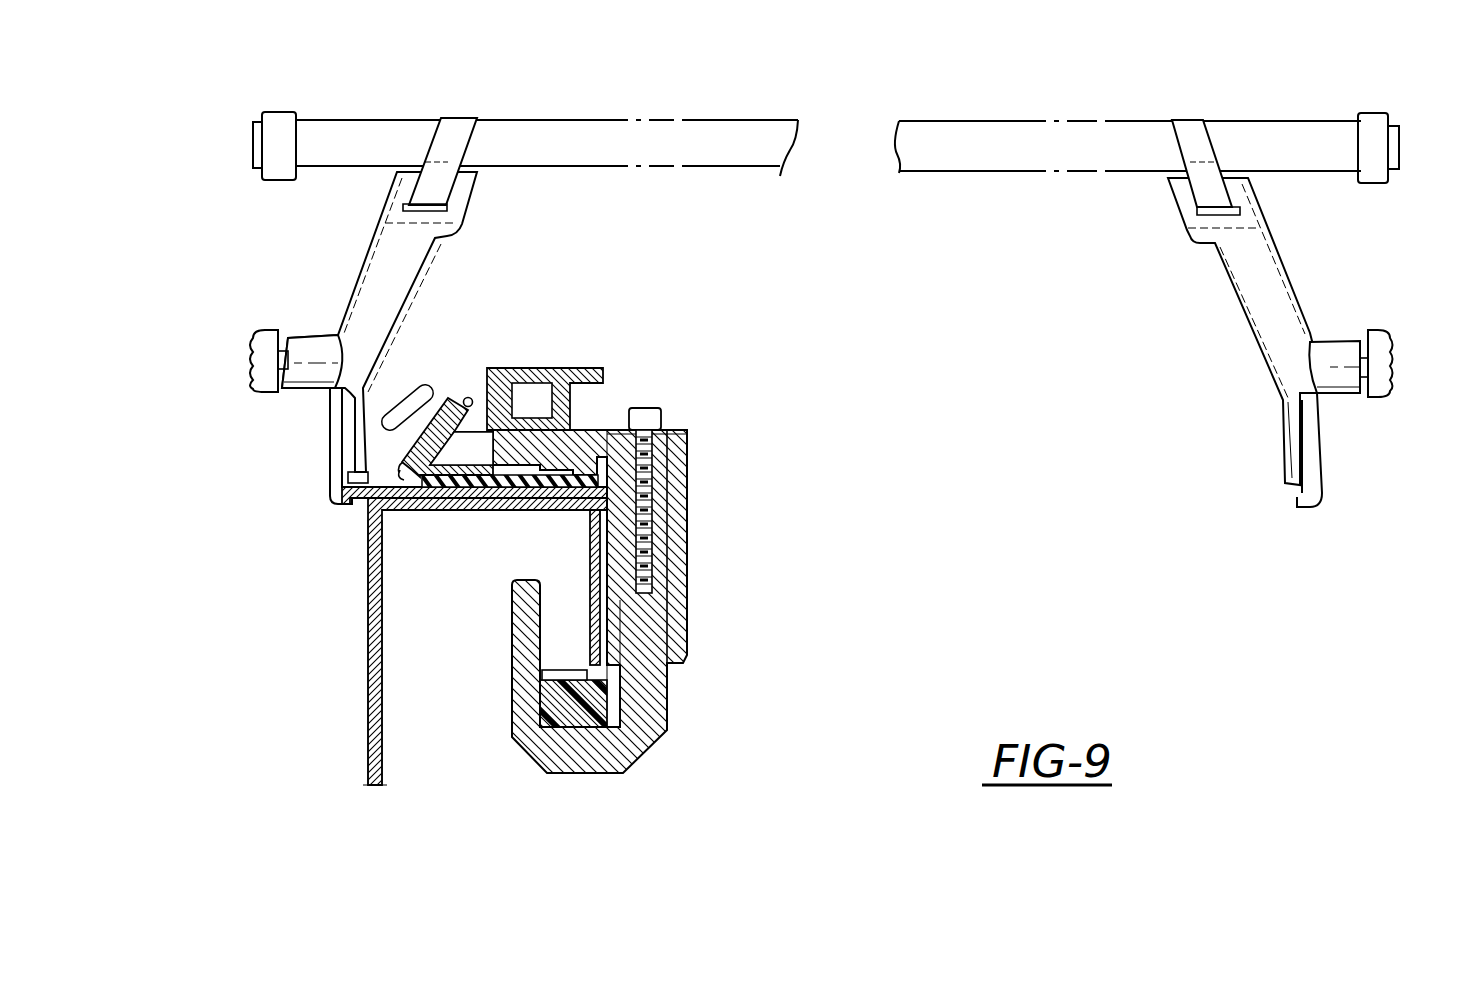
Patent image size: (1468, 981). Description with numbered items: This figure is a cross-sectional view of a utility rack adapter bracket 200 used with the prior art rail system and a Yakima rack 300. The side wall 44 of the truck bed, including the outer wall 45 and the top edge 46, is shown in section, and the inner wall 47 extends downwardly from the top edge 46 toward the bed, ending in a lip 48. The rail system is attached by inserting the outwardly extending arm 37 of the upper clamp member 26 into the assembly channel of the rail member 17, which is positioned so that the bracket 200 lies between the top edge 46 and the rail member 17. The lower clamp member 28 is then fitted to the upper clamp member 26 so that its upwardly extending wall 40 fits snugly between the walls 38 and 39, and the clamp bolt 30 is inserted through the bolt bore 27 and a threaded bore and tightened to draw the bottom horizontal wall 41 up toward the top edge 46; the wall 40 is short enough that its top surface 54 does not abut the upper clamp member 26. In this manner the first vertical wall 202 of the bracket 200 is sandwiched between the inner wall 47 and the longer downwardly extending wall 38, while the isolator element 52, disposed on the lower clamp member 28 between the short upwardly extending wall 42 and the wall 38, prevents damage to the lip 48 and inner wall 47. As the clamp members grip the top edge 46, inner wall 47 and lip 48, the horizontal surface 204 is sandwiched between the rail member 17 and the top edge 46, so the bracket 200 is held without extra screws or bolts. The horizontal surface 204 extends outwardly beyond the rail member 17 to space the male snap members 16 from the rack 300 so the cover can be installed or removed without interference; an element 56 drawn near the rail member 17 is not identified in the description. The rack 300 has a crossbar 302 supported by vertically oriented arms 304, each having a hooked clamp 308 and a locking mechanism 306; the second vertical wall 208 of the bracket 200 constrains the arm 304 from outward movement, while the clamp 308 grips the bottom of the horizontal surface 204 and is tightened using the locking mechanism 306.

The crossbar 302 is at (583, 130).
The utility rack 300 is at (297, 279).
The arms 304 is at (408, 268).
The locking mechanism 306 is at (253, 362).
The clamp 308 is at (330, 470).
The male snap members 16 is at (447, 379).
The support member 56 is at (503, 365).
The rail member 17 is at (579, 351).
The outwardly extending arm 37 is at (598, 437).
The clamp bolt 30 is at (660, 418).
The bolt bore 27 is at (658, 437).
The top surface 54 is at (650, 468).
The upper clamp member 26 is at (690, 522).
The first vertical wall 202 is at (600, 603).
The wall 39 is at (680, 642).
The longer downwardly extending wall 38 is at (650, 667).
The upwardly extending wall 40 is at (618, 703).
The lower clamp member 28 is at (638, 779).
The bottom horizontal wall 41 is at (580, 775).
The isolator element 52 is at (550, 735).
The short upwardly extending wall 42 is at (510, 660).
The side wall 44 is at (347, 706).
The outer wall 45 is at (368, 650).
The lip 48 is at (562, 672).
The top edge 46 is at (470, 482).
The inner wall 47 is at (593, 532).
The horizontal surface 204 is at (428, 500).
The bracket 200 is at (349, 518).
The second vertical wall 208 is at (350, 497).